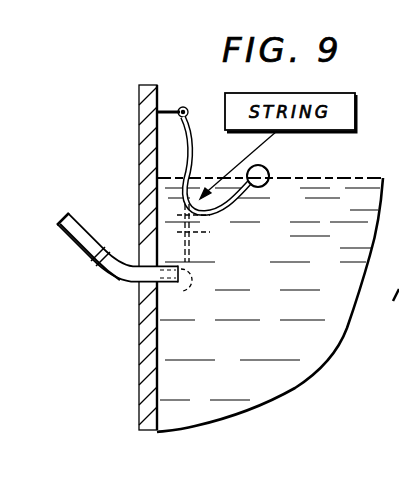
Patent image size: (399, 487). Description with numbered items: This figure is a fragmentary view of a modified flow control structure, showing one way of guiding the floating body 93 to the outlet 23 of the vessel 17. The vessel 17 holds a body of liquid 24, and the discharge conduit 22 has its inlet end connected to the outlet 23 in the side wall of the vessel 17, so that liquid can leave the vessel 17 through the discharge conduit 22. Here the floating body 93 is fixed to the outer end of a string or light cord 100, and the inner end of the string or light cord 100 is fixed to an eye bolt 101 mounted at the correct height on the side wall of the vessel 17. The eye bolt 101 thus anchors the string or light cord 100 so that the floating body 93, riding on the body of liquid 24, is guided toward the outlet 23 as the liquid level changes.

The vessel 17 is at (145, 411).
The discharge conduit 22 is at (72, 241).
The outlet 23 is at (182, 290).
The body of liquid 24 is at (173, 345).
The floating body 93 is at (269, 168).
The string or light cord 100 is at (191, 148).
The eye bolt 101 is at (186, 106).